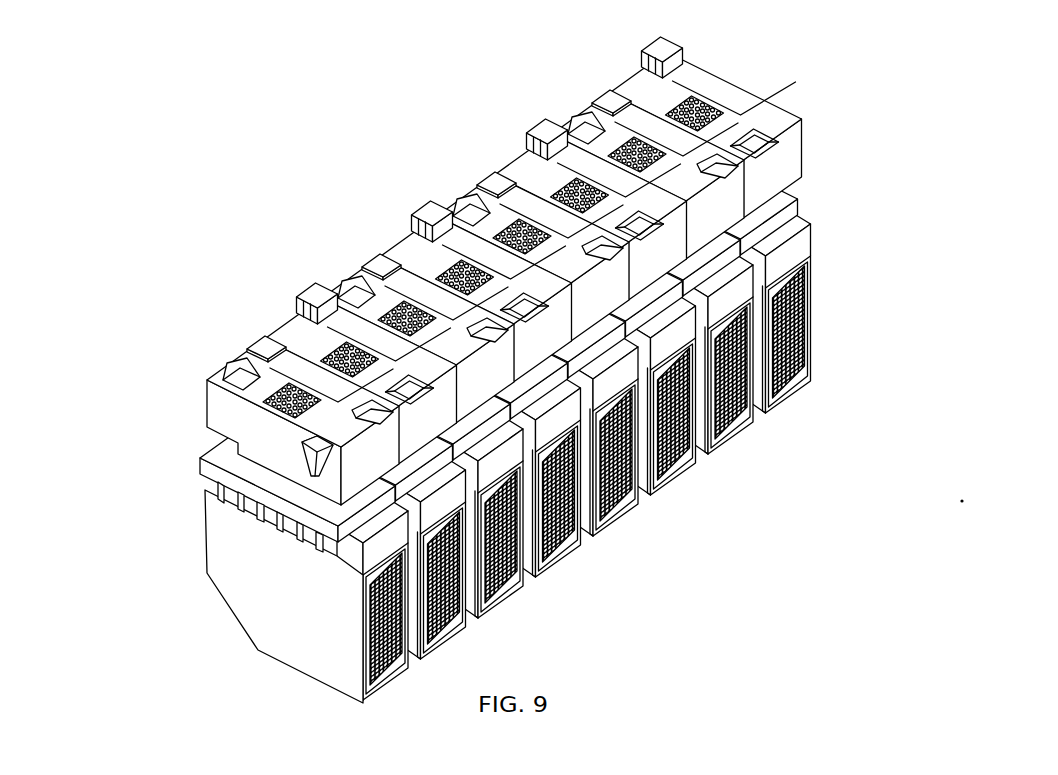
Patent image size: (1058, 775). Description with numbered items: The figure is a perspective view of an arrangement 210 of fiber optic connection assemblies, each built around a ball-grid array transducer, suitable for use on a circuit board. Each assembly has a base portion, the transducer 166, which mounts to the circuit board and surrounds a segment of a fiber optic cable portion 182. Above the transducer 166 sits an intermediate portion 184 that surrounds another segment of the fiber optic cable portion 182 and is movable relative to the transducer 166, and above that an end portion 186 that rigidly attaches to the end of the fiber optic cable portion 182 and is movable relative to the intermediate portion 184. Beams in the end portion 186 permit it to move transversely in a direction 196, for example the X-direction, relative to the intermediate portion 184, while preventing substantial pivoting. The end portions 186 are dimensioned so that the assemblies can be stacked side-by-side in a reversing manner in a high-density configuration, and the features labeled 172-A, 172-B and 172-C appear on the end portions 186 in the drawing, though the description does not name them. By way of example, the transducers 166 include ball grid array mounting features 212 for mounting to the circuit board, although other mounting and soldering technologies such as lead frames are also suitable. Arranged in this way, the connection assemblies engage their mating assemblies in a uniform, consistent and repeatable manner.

The arrangement 210 is at (466, 367).
The ball grid array mounting features 212 is at (817, 298).
The end portion 186 is at (308, 358).
The latch tab 172-A is at (172, 365).
The latch tab 172-B is at (533, 479).
The latch tab 172-C is at (457, 545).
The direction 196 is at (184, 424).
The intermediate portion 184 is at (260, 479).
The fiber optic cable portion 182 is at (270, 526).
The transducer 166 is at (249, 596).